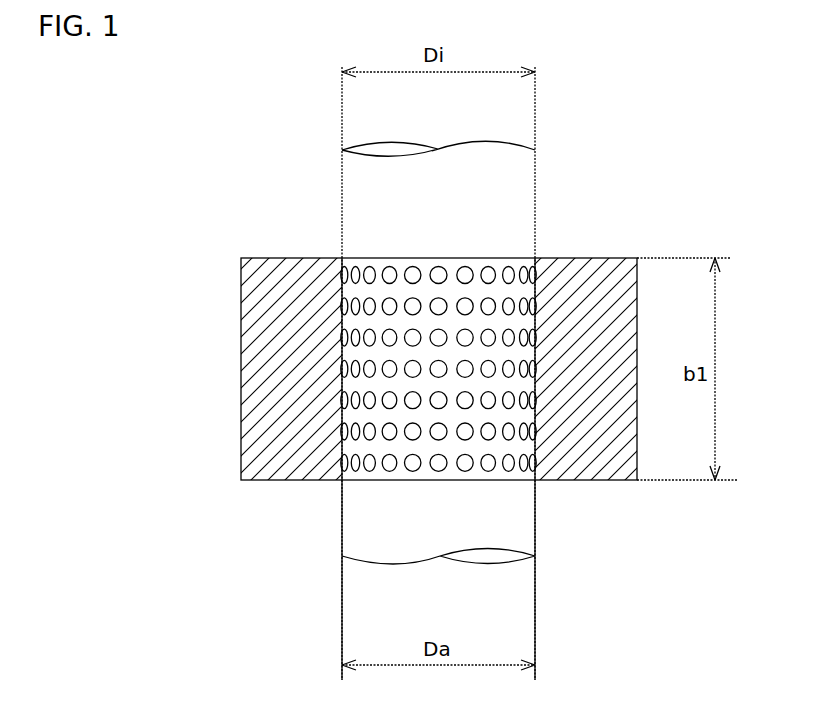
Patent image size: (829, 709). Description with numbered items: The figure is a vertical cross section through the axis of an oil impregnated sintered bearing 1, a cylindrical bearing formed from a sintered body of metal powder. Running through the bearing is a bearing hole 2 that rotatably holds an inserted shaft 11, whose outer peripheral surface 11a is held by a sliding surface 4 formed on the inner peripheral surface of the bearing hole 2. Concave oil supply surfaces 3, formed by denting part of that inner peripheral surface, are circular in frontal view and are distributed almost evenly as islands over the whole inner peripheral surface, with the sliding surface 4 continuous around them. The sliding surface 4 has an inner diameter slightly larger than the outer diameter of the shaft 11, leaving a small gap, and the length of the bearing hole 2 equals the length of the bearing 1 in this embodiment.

The oil impregnated sintered bearing 1 is at (583, 255).
The bearing hole 2 is at (343, 263).
The oil supply surfaces 3 is at (488, 274).
The sliding surface 4 is at (383, 292).
The shaft 11 is at (343, 535).
The outer peripheral surface 11a is at (487, 518).